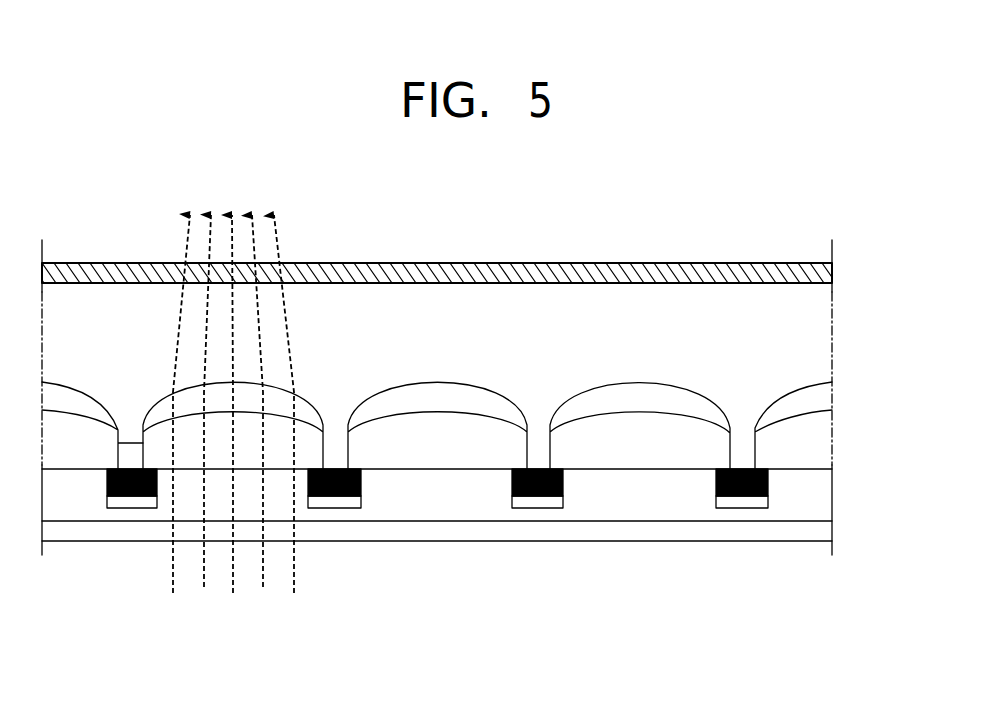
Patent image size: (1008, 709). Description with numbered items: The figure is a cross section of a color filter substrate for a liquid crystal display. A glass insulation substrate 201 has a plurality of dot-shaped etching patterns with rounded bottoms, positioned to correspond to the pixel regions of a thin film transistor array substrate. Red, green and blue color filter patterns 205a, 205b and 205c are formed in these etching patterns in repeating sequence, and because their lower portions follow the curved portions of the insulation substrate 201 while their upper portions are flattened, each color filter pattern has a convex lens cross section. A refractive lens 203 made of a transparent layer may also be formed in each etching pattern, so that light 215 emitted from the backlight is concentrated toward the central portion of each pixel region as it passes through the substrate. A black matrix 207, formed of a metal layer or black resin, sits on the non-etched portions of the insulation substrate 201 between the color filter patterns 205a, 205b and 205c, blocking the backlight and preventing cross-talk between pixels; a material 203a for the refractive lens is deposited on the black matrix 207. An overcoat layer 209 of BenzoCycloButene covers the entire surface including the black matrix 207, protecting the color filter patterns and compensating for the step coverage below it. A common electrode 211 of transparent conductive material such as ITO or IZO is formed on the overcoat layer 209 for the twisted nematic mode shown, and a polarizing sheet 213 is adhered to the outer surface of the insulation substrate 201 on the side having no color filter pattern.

The insulation substrate 201 is at (817, 318).
The refractive lens 203 is at (651, 395).
The material for the refractive lens 203a is at (537, 500).
The color filter pattern 205a is at (163, 438).
The color filter pattern 205b is at (467, 428).
The color filter pattern 205c is at (717, 441).
The black matrix 207 is at (362, 489).
The overcoat layer 209 is at (817, 494).
The common electrode 211 is at (817, 534).
The polarizing sheet 213 is at (817, 272).
The light 215 is at (297, 600).